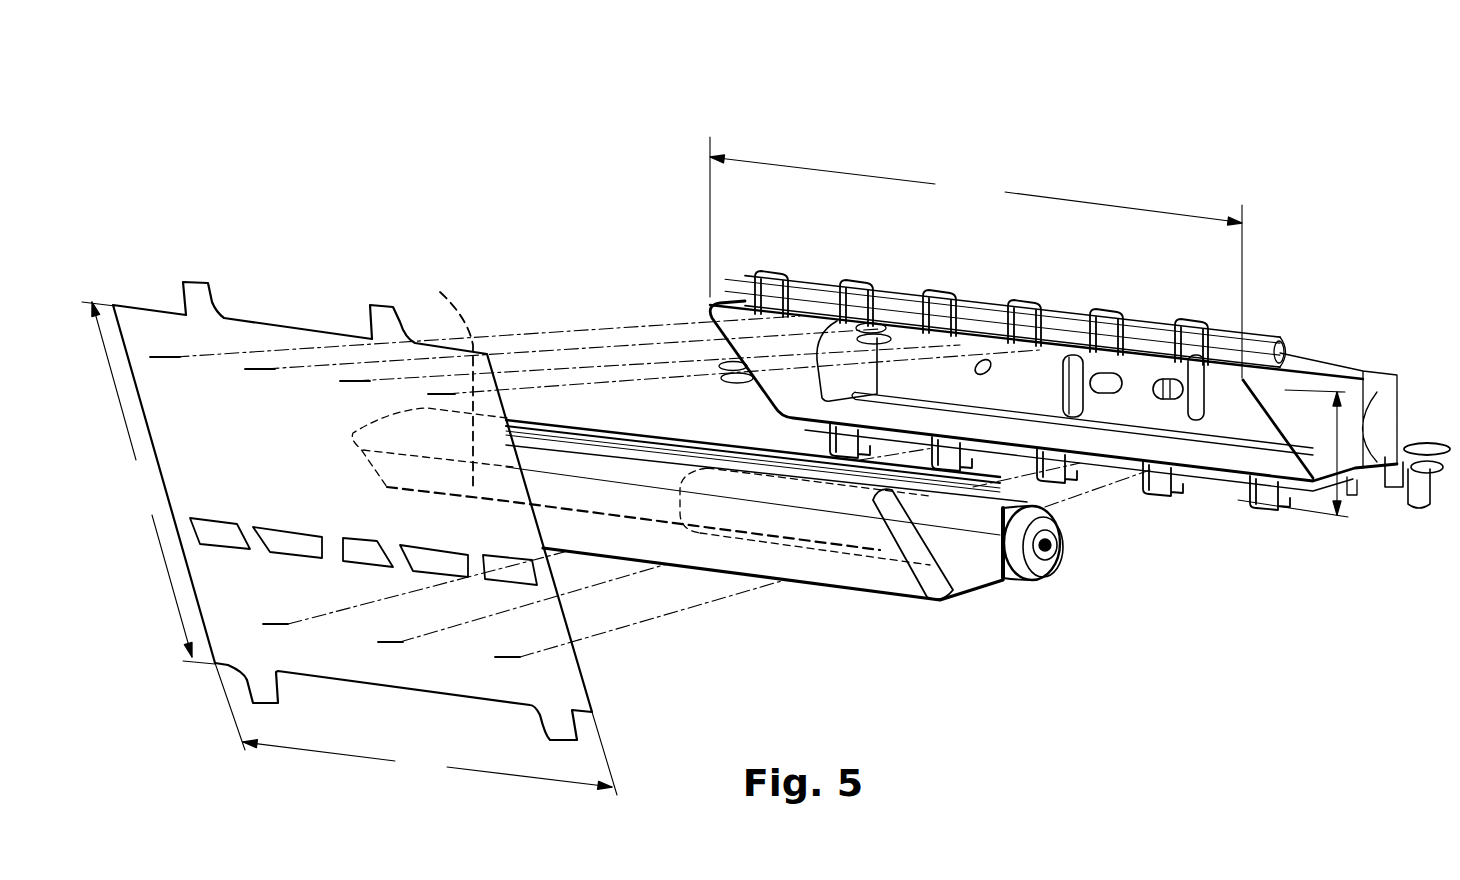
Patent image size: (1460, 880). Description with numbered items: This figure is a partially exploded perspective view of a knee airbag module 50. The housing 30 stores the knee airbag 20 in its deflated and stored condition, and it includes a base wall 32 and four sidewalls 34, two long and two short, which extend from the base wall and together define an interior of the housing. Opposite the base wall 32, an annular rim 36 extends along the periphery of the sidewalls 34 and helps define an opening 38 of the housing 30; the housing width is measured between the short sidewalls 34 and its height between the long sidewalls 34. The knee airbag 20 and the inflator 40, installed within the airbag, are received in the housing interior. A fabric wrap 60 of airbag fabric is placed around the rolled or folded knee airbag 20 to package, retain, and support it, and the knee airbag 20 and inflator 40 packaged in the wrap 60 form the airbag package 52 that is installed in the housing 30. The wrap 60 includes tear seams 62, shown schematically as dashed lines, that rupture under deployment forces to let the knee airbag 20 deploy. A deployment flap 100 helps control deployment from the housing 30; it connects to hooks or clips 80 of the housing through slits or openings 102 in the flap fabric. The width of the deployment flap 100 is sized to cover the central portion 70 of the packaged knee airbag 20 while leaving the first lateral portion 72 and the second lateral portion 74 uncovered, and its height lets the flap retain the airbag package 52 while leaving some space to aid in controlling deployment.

The knee airbag module 50 is at (344, 162).
The deployment flap 100 is at (412, 660).
The slits or openings 102 is at (440, 393).
The first lateral portion 72 is at (450, 379).
The central portion 70 is at (593, 487).
The second lateral portion 74 is at (817, 567).
The tear seams 62 is at (618, 515).
The fabric wrap 60 is at (683, 533).
The knee airbag 20 is at (738, 489).
The inflator 40 is at (1053, 553).
The airbag package 52 is at (953, 620).
The housing 30 is at (1047, 377).
The base wall 32 is at (938, 370).
The sidewalls 34 is at (850, 414).
The annular rim 36 is at (1110, 463).
The opening 38 is at (878, 367).
The hooks or clips 80 is at (780, 270).